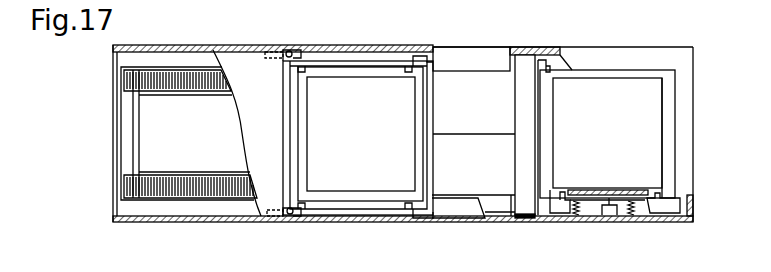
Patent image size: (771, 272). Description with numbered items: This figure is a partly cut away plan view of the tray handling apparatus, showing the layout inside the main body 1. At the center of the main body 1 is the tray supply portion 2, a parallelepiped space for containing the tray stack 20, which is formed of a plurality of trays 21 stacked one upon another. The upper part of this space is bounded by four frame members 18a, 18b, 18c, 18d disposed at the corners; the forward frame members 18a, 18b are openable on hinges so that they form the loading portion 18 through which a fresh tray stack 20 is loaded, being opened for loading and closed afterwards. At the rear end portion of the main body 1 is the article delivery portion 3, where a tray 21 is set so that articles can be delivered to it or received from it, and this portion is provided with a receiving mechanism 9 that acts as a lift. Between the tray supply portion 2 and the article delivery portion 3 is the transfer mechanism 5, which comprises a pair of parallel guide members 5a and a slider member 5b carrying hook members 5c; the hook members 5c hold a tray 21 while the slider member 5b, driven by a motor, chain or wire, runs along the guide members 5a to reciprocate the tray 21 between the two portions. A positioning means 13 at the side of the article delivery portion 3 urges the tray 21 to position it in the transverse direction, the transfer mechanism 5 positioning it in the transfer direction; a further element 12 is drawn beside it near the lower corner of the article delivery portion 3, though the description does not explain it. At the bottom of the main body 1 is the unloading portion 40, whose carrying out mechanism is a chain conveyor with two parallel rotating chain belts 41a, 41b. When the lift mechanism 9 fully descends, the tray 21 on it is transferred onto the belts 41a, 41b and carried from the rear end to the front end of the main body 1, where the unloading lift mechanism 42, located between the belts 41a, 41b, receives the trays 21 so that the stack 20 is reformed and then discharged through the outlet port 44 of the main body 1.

The main body 1 is at (473, 45).
The tray supply portion 2 is at (357, 97).
The article delivery portion 3 is at (646, 141).
The transfer mechanism 5 is at (509, 94).
The guide members 5a is at (495, 208).
The slider member 5b is at (522, 163).
The hook members 5c is at (546, 56).
The receiving mechanism 9 is at (565, 176).
The stopper 12 is at (668, 208).
The positioning means 13 is at (597, 200).
The loading portion 18 is at (281, 115).
The frame member 18a is at (283, 50).
The frame member 18b is at (272, 222).
The frame member 18c is at (420, 56).
The frame member 18d is at (422, 220).
The tray stack 20 is at (383, 66).
The tray 21 is at (588, 90).
The unloading portion 40 is at (203, 122).
The rotating chain belt 41a is at (126, 78).
The rotating chain belt 41b is at (152, 201).
The unloading lift mechanism 42 is at (127, 99).
The outlet port 44 is at (110, 146).